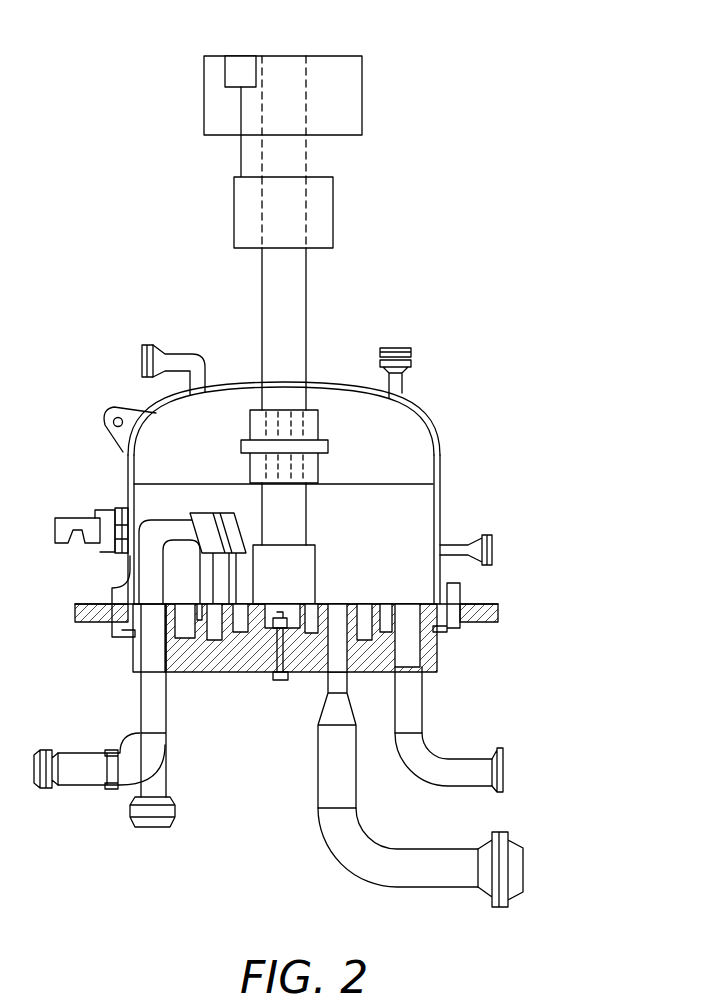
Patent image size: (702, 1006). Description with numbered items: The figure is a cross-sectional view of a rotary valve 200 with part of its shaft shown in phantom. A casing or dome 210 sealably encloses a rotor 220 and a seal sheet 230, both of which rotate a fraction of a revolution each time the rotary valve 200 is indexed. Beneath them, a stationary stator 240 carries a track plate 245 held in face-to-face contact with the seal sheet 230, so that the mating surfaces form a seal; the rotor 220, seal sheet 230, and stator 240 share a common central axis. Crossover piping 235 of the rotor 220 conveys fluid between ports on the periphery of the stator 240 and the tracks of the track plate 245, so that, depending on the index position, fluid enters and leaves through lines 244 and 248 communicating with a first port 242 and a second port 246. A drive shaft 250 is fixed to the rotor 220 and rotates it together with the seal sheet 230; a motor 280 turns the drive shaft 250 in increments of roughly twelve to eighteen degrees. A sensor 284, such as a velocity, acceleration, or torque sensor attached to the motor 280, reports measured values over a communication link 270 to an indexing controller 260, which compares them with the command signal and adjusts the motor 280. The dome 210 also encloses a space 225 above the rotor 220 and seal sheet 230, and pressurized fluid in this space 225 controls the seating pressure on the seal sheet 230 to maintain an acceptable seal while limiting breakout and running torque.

The rotary valve 200 is at (527, 44).
The casing or dome 210 is at (428, 425).
The rotor 220 is at (428, 503).
The space 225 is at (397, 456).
The seal sheet 230 is at (341, 603).
The crossover piping 235 is at (176, 500).
The stator 240 is at (212, 665).
The first port 242 is at (142, 654).
The line 244 is at (140, 700).
The track plate 245 is at (379, 612).
The second port 246 is at (333, 657).
The line 248 is at (318, 785).
The drive shaft 250 is at (307, 293).
The indexing controller 260 is at (336, 213).
The communication link 270 is at (236, 156).
The motor 280 is at (365, 97).
The sensor 284 is at (241, 56).